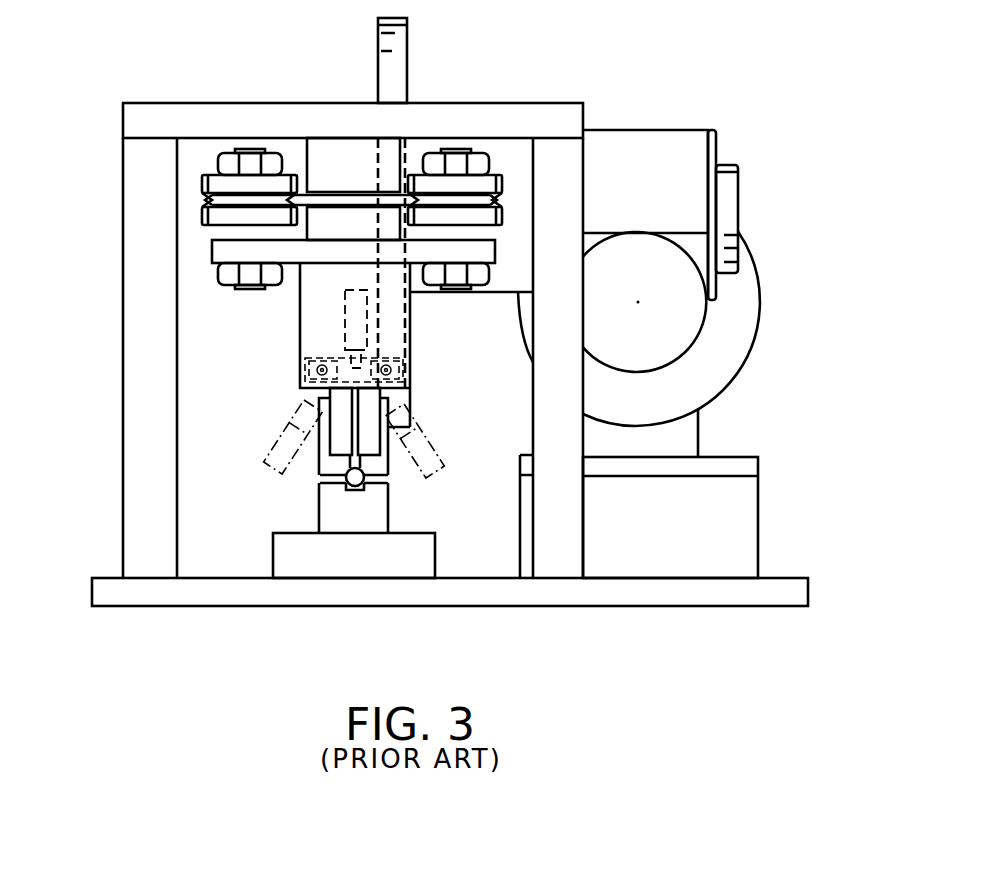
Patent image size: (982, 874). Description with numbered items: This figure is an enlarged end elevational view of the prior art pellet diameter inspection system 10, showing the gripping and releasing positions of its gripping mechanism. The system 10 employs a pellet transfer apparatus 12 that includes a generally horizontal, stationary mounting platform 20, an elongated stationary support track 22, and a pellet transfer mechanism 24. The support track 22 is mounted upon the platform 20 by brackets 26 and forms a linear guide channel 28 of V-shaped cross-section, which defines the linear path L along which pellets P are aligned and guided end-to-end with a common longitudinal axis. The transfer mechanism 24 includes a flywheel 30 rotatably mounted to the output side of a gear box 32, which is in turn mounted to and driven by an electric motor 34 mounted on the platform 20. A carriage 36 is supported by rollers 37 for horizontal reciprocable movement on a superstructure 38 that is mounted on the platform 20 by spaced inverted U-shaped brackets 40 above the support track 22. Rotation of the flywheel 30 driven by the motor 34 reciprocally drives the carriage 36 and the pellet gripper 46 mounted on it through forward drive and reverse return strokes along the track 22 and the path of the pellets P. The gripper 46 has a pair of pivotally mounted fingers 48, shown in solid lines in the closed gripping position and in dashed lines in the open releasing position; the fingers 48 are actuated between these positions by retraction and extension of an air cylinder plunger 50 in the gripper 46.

The pellet diameter inspection system 10 is at (606, 84).
The pellet transfer apparatus 12 is at (314, 349).
The mounting platform 20 is at (670, 596).
The stationary support track 22 is at (382, 503).
The pellet transfer mechanism 24 is at (503, 330).
The brackets 26 is at (297, 567).
The linear guide channel 28 is at (363, 490).
The flywheel 30 is at (407, 57).
The gear box 32 is at (683, 312).
The electric motor 34 is at (730, 388).
The carriage 36 is at (212, 243).
The rollers 37 is at (296, 173).
The superstructure 38 is at (220, 110).
The inverted U-shaped brackets 40 is at (140, 318).
The pellet gripper 46 is at (280, 352).
The fingers 48 is at (300, 450).
The air cylinder plunger 50 is at (345, 312).
The pellets P is at (345, 471).
The linear path L is at (366, 470).